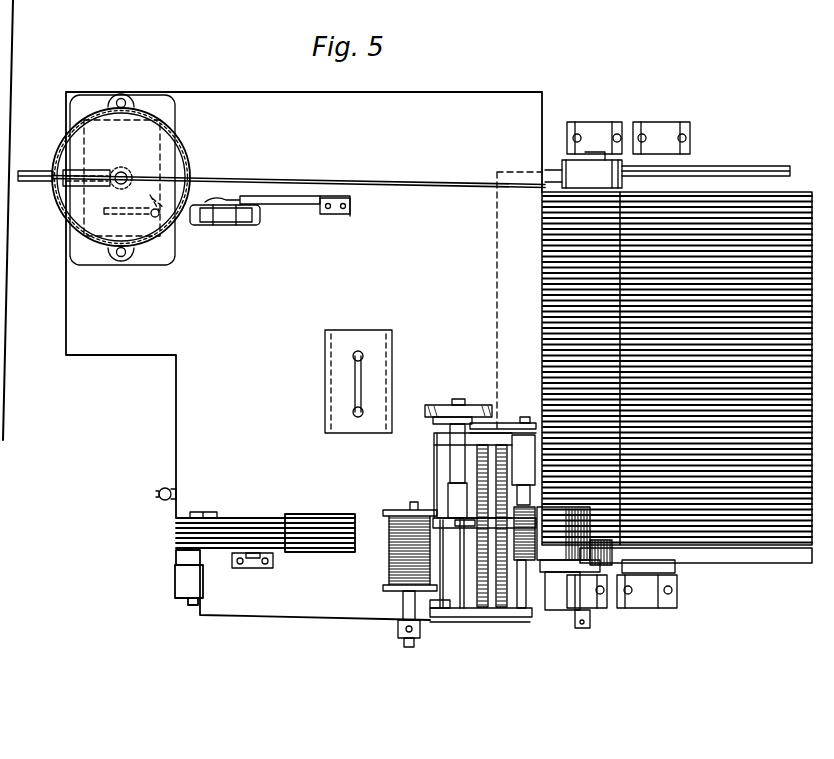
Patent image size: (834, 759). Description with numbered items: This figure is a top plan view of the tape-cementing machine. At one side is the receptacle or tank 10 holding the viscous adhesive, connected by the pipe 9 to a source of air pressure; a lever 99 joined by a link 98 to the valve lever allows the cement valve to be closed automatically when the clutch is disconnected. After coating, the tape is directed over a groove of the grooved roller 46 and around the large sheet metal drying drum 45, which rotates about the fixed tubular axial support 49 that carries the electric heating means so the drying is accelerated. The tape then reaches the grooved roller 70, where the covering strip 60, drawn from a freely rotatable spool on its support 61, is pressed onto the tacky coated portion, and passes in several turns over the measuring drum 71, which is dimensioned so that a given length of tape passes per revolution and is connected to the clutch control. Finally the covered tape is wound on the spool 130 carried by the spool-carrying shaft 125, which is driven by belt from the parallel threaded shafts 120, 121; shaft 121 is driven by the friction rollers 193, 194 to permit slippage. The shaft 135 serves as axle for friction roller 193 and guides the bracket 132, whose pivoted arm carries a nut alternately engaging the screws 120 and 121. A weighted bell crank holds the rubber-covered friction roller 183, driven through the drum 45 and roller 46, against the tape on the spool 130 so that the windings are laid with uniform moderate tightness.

The pipe 9 is at (92, 172).
The receptacle or tank 10 is at (186, 156).
The drying drum 45 is at (745, 170).
The grooved roller 46 is at (620, 162).
The fixed tubular axial support 49 is at (688, 125).
The covering strip 60 is at (416, 183).
The spool support 61 is at (400, 632).
The grooved roller 70 is at (176, 518).
The measuring drum or pulley 71 is at (304, 554).
The link 98 is at (216, 204).
The lever 99 is at (336, 216).
The threaded shaft 120 is at (499, 605).
The threaded shaft 121 is at (481, 605).
The spool-carrying shaft 125 is at (560, 562).
The spool 130 is at (520, 610).
The bracket 132 is at (452, 622).
The shaft 135 is at (450, 462).
The friction roller 183 is at (596, 600).
The friction roller 193 is at (455, 404).
The friction roller 194 is at (500, 424).